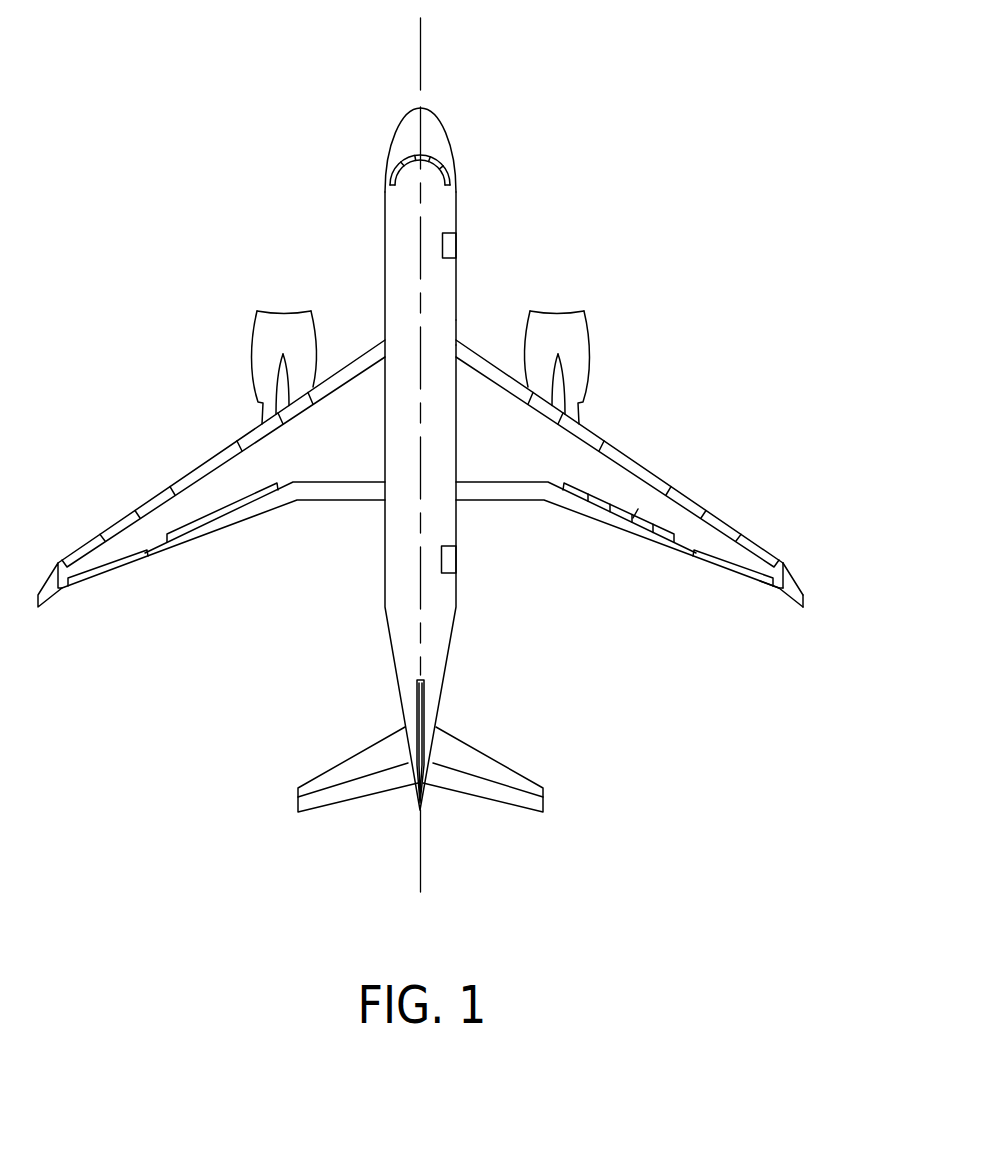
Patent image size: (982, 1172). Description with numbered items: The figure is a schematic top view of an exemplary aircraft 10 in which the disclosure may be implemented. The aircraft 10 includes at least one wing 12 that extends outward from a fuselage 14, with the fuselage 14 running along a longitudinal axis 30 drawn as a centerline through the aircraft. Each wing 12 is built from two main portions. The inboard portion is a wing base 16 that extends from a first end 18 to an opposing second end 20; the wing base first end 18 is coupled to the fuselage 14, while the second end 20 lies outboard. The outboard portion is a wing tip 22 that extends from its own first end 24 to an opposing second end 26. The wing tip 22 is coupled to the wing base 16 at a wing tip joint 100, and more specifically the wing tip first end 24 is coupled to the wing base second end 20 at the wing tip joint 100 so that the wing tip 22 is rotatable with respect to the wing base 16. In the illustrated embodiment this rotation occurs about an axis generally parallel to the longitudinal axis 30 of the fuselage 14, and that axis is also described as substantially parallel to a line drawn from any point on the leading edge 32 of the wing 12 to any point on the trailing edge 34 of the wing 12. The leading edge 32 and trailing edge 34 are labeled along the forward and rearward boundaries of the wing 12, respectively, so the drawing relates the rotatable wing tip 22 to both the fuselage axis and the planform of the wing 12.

The aircraft 10 is at (693, 205).
The wing 12 is at (247, 463).
The fuselage 14 is at (385, 193).
The wing base 16 is at (198, 493).
The wing base first end 18 is at (462, 326).
The wing base second end 20 is at (788, 553).
The wing tip 22 is at (787, 598).
The wing tip first end 24 is at (790, 558).
The wing tip second end 26 is at (807, 586).
The longitudinal axis 30 is at (420, 65).
The leading edge 32 is at (720, 523).
The trailing edge 34 is at (712, 563).
The wing tip joint 100 is at (775, 593).